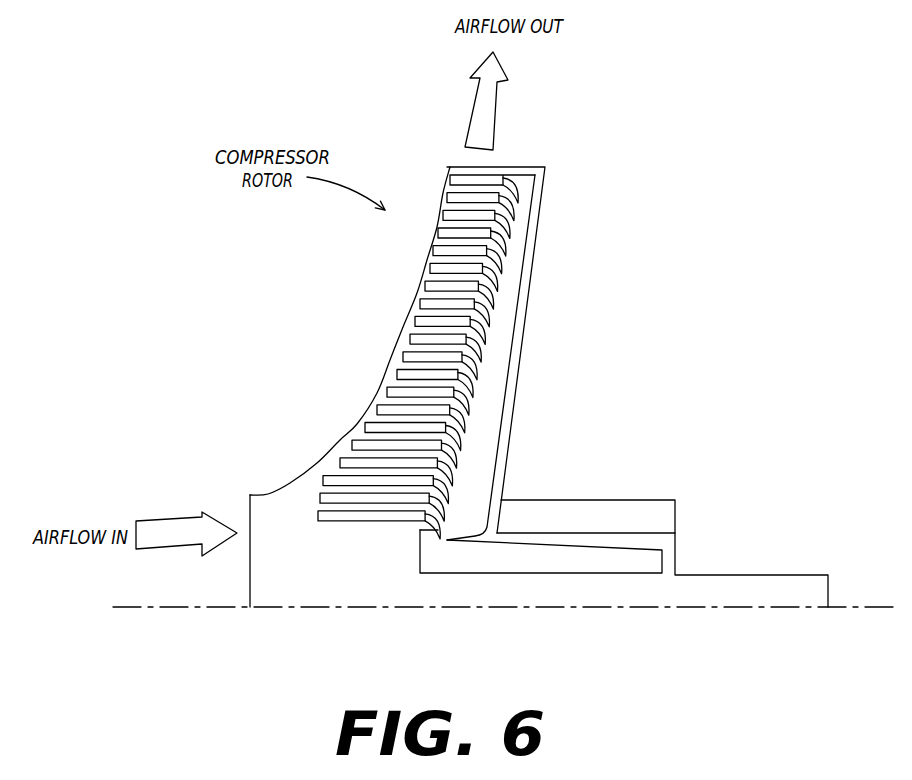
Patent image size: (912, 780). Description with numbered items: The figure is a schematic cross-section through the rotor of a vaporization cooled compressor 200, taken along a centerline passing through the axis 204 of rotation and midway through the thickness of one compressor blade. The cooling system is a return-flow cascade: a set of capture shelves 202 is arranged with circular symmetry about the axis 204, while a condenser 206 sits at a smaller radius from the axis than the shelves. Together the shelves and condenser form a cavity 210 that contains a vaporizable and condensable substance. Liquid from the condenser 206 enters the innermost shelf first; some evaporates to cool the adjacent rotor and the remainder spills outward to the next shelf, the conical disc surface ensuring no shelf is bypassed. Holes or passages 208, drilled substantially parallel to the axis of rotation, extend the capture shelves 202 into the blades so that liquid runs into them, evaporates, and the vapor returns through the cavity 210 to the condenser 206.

The vaporization cooled compressor 200 is at (693, 135).
The capture shelves 202 is at (500, 264).
The axis of rotation 204 is at (579, 607).
The condenser 206 is at (515, 543).
The holes or passages 208 is at (410, 447).
The cavity 210 is at (490, 398).